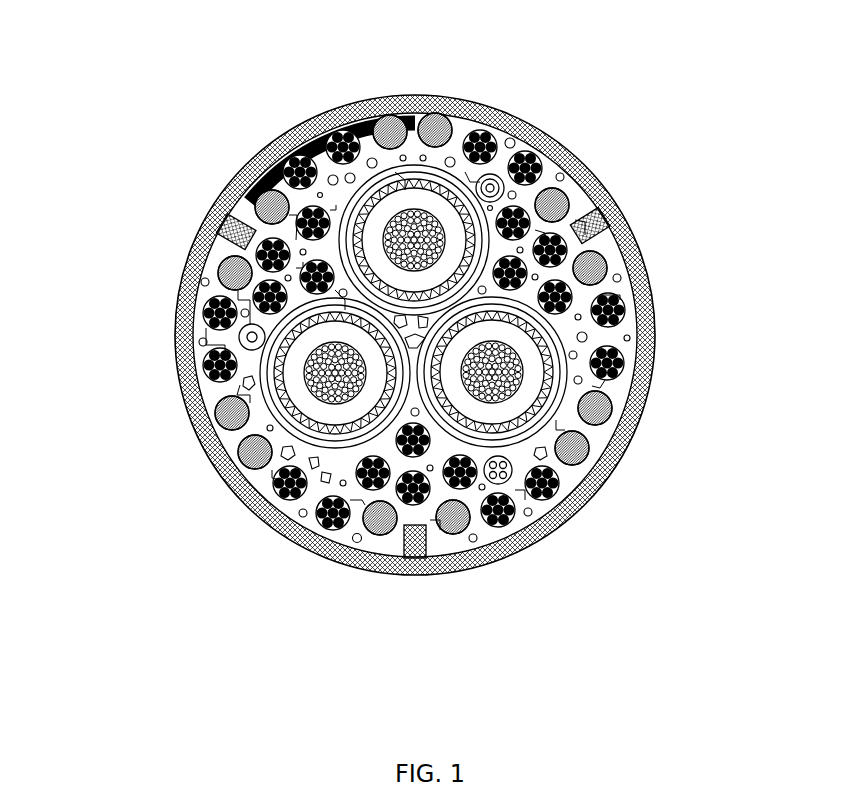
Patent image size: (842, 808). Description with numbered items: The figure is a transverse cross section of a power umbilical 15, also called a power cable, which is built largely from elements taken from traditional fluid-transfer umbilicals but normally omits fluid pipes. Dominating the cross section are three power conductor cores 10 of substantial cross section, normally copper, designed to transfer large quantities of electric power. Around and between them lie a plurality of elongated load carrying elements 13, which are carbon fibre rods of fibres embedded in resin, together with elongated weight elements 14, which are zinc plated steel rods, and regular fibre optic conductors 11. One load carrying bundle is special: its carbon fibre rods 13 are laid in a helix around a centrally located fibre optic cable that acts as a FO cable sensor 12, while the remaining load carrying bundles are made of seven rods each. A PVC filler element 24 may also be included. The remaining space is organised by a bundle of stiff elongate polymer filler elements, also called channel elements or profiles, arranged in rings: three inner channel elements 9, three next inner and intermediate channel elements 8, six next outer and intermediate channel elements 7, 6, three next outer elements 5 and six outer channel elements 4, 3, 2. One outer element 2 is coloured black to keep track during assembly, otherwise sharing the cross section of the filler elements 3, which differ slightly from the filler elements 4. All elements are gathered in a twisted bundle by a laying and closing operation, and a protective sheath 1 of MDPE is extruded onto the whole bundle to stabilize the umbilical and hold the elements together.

The power umbilical 15 is at (208, 128).
The protective sheath 1 is at (257, 146).
The outer channel element 2 is at (313, 112).
The outer channel element 3 is at (630, 315).
The outer channel element 4 is at (550, 140).
The next outer element 5 is at (224, 247).
The next outer intermediate channel element 6 is at (367, 110).
The next outer intermediate channel element 7 is at (449, 170).
The next inner intermediate channel element 8 is at (205, 320).
The inner channel element 9 is at (341, 110).
The power conductor core 10 is at (415, 197).
The fibre optic conductor 11 is at (488, 174).
The FO cable sensor 12 is at (230, 272).
The load carrying element 13 is at (512, 125).
The weight element 14 is at (384, 120).
The PVC filler element 24 is at (613, 467).